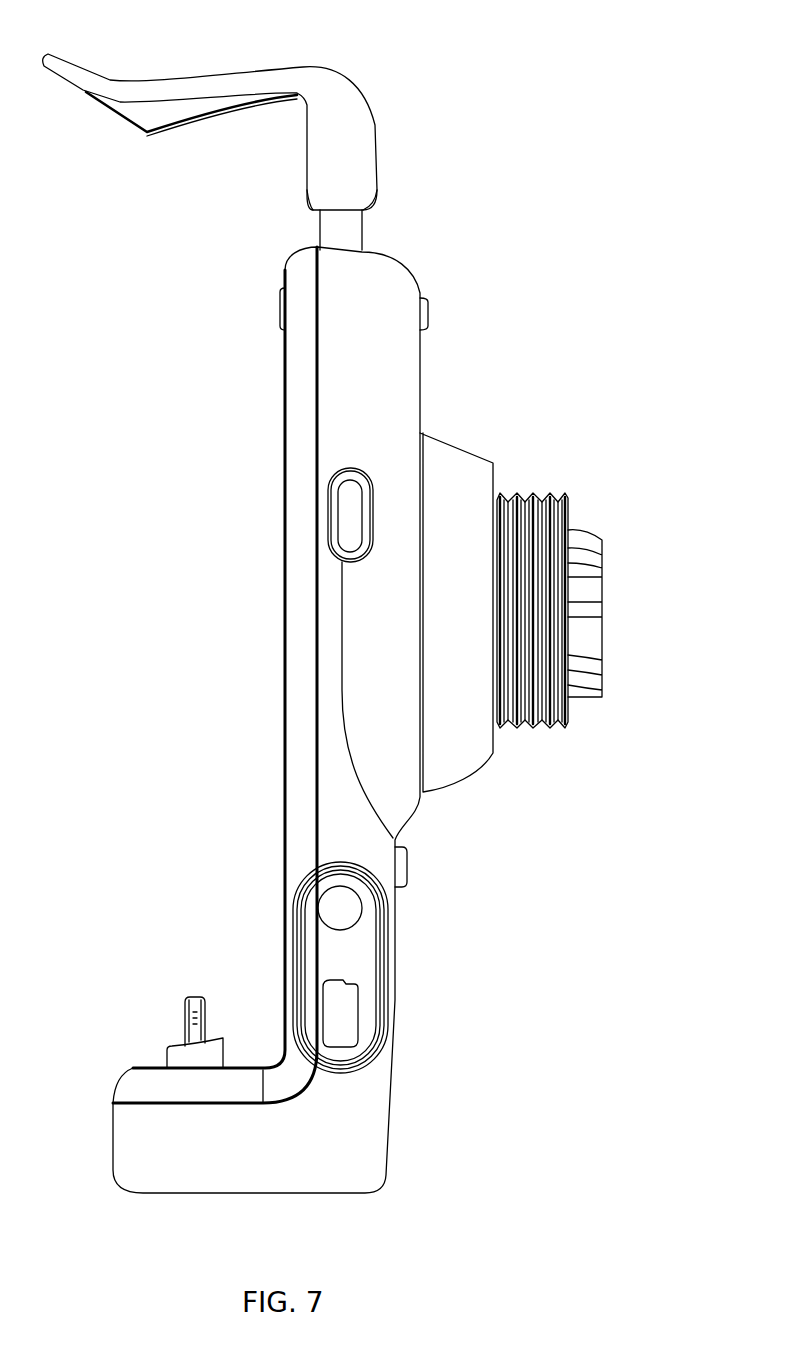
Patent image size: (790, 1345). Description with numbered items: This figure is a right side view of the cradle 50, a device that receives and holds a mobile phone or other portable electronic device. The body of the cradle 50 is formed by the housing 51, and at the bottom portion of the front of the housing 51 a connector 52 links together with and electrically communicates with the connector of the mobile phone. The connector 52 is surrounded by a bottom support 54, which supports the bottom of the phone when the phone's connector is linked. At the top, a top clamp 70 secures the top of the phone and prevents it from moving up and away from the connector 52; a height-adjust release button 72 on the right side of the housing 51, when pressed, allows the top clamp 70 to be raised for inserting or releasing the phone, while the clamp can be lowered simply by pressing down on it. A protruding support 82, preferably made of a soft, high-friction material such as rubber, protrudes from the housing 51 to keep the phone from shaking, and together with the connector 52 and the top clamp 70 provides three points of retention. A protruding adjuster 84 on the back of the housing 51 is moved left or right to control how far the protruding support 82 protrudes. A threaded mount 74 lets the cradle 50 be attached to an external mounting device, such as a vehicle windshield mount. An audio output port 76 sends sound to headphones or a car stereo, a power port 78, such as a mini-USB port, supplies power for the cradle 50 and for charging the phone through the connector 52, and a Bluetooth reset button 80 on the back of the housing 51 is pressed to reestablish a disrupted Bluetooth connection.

The cradle 50 is at (600, 84).
The housing 51 is at (402, 397).
The connector 52 is at (197, 1000).
The bottom support 54 is at (175, 1050).
The top clamp 70 is at (363, 123).
The height-adjust release button 72 is at (347, 515).
The threaded mount 74 is at (540, 495).
The audio output port 76 is at (350, 912).
The power port 78 is at (349, 1004).
The Bluetooth reset button 80 is at (408, 865).
The protruding support 82 is at (280, 305).
The protruding adjuster 84 is at (428, 305).